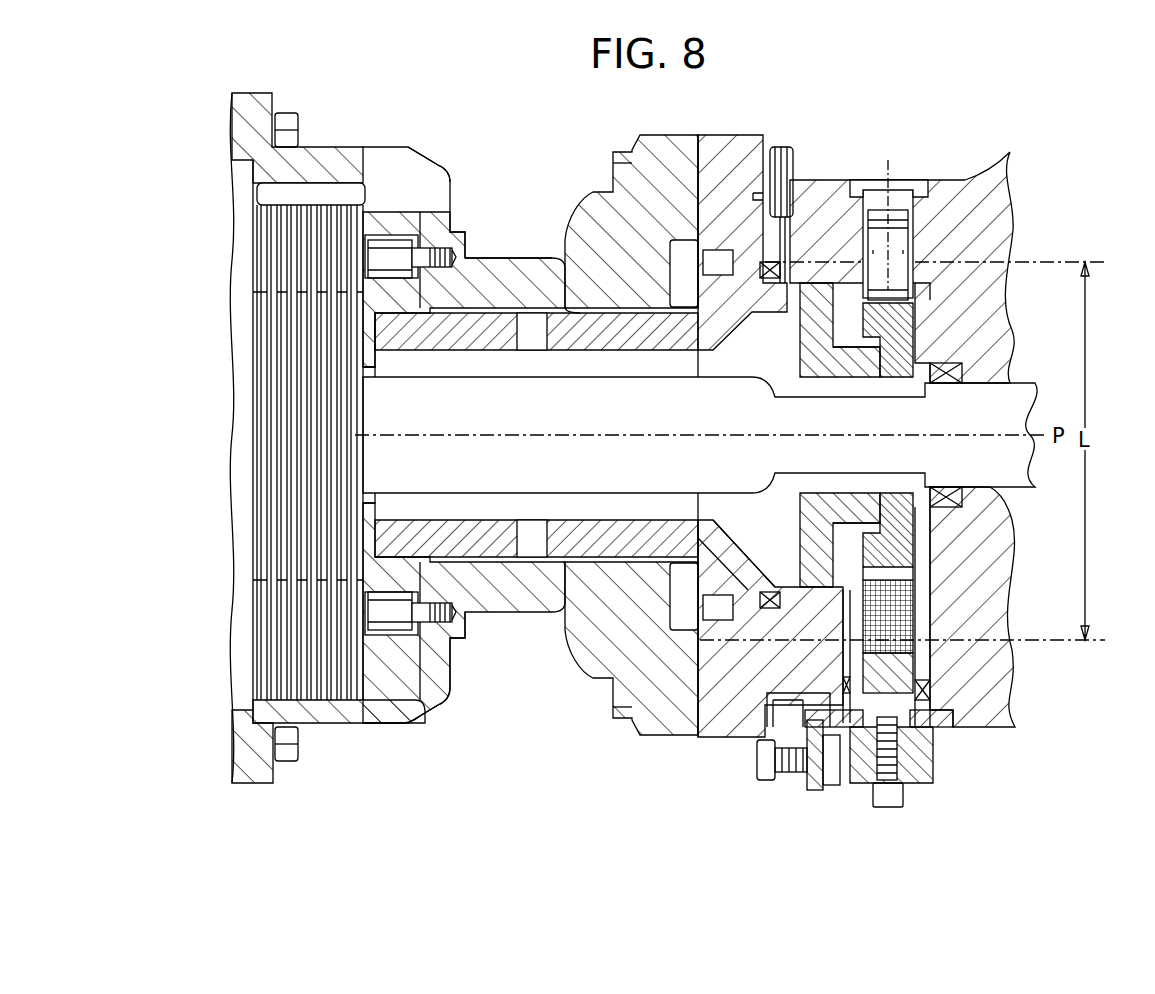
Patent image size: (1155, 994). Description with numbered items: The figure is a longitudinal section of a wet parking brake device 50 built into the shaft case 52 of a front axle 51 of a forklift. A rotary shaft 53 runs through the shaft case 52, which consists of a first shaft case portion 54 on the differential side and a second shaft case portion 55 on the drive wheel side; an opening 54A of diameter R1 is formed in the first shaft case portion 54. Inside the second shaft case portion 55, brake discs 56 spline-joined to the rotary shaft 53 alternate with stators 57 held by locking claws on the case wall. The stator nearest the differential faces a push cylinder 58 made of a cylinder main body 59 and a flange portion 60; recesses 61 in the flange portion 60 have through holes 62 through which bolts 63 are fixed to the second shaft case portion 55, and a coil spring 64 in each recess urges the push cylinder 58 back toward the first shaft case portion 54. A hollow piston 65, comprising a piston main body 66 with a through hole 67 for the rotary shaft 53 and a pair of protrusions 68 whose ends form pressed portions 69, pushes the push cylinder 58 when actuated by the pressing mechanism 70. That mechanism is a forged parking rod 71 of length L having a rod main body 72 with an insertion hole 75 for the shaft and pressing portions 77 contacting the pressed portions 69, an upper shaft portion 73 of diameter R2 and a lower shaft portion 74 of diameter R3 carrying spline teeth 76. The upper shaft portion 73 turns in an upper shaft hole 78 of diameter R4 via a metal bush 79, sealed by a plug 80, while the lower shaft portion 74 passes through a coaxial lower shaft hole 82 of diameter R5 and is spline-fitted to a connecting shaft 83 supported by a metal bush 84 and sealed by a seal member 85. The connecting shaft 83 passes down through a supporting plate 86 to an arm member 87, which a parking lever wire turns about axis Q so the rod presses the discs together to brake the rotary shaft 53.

The wet parking brake device 50 is at (1058, 210).
The front axle 51 is at (965, 180).
The shaft case 52 is at (731, 790).
The rotary shaft 53 is at (530, 505).
The first shaft case portion 54 is at (750, 740).
The opening 54A is at (660, 238).
The second shaft case portion 55 is at (645, 740).
The brake discs 56 is at (345, 222).
The stators 57 is at (345, 575).
The push cylinder 58 is at (575, 300).
The cylinder main body 59 is at (493, 305).
The flange portion 60 is at (392, 222).
The recesses 61 is at (420, 240).
The through hole 62 is at (400, 255).
The bolt 63 is at (442, 252).
The coil spring 64 is at (414, 320).
The hollow piston 65 is at (586, 682).
The piston main body 66 is at (758, 230).
The through hole 67 is at (697, 345).
The protrusions 68 is at (848, 368).
The pressed portion 69 is at (898, 378).
The pressing mechanism 70 is at (960, 348).
The parking rod 71 is at (960, 545).
The rod main body 72 is at (975, 575).
The upper shaft portion 73 is at (803, 282).
The lower shaft portion 74 is at (915, 628).
The insertion hole 75 is at (928, 405).
The spline teeth 76 is at (780, 578).
The pressing portions 77 is at (866, 394).
The upper shaft hole 78 is at (875, 245).
The metal bush 79 is at (990, 240).
The plug 80 is at (903, 200).
The lower shaft hole 82 is at (870, 603).
The connecting shaft 83 is at (930, 660).
The metal bush 84 is at (700, 737).
The seal member 85 is at (948, 716).
The supporting plate 86 is at (937, 742).
The arm member 87 is at (905, 790).
The central axis Q is at (887, 143).
The diameter R1 is at (802, 413).
The diameter R2 is at (935, 285).
The diameter R3 is at (958, 612).
The diameter R4 is at (922, 205).
The diameter R5 is at (843, 735).